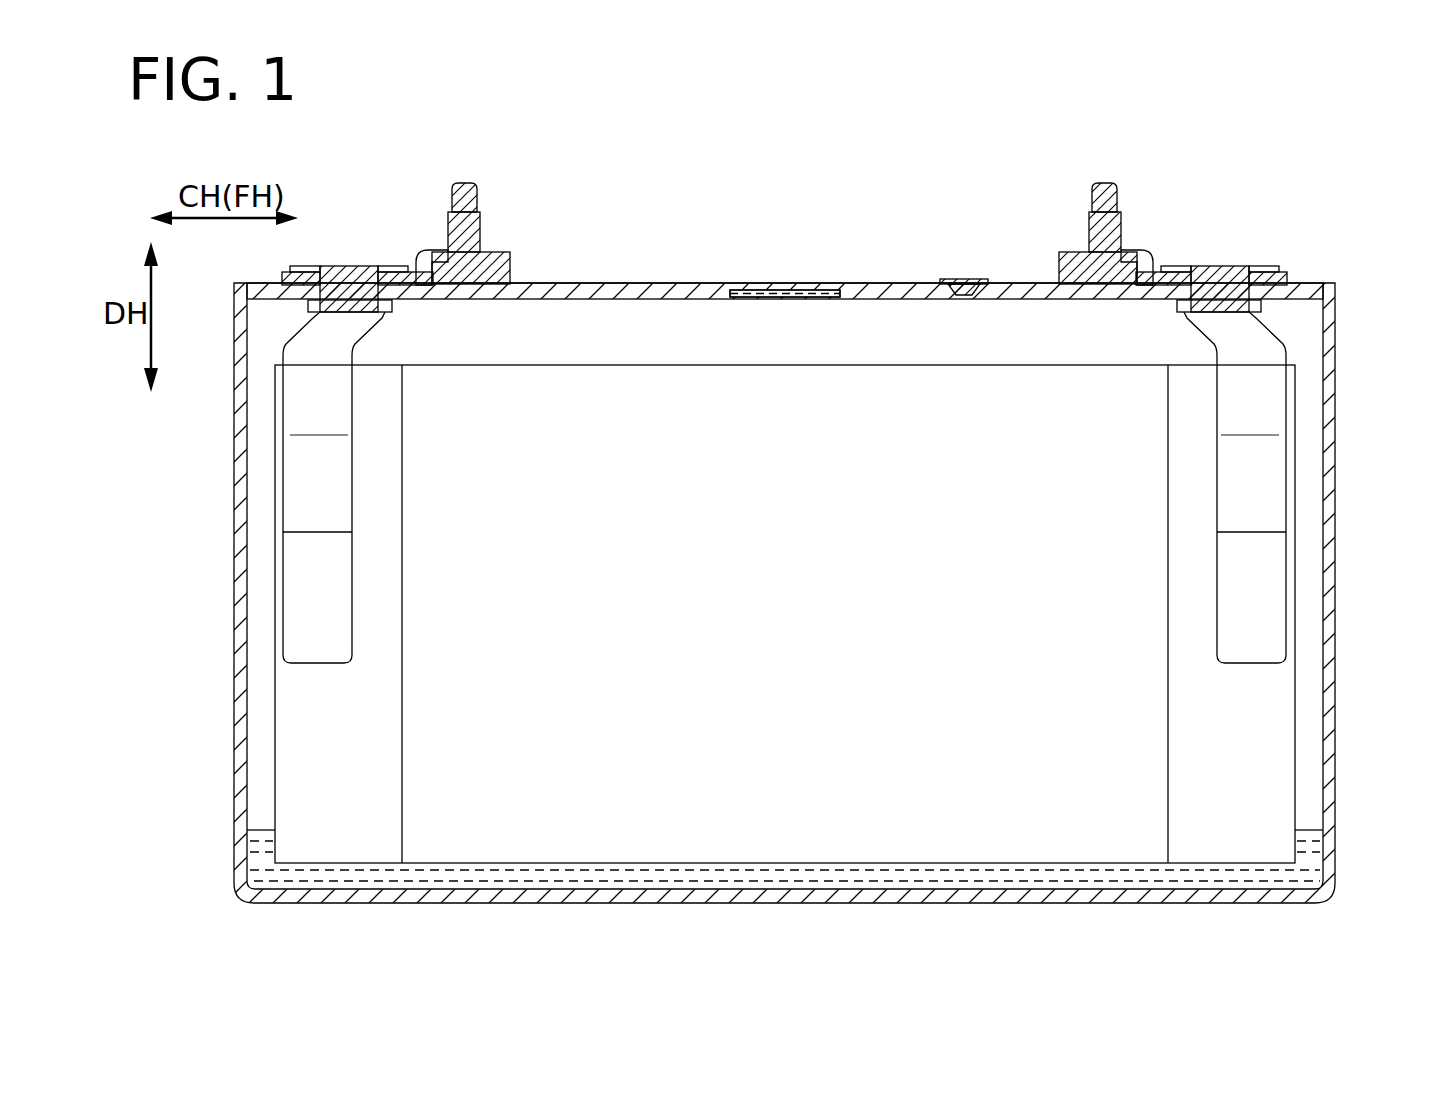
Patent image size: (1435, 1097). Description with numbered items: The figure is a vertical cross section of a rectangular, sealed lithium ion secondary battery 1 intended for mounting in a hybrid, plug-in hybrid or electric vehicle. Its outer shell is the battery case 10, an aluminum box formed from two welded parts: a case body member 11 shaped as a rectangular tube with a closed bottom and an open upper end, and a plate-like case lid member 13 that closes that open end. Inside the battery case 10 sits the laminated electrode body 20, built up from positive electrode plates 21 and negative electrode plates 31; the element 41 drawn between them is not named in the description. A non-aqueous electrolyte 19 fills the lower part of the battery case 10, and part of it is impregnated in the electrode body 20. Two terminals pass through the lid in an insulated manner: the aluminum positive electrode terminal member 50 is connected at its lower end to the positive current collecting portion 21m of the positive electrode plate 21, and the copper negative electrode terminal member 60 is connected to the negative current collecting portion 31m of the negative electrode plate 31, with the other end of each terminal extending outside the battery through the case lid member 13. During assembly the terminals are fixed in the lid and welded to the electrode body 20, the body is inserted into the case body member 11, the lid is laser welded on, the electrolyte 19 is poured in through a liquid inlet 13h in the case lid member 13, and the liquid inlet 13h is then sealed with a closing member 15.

The battery 1 is at (800, 182).
The battery case 10 is at (505, 903).
The case body member 11 is at (343, 903).
The case lid member 13 is at (648, 283).
The liquid inlet 13h is at (964, 300).
The closing member 15 is at (970, 279).
The non-aqueous electrolyte 19 is at (740, 808).
The electrode body 20 is at (1108, 818).
The positive electrode plate 21 is at (297, 708).
The positive current collecting portion 21m is at (303, 763).
The negative electrode plate 31 is at (1273, 708).
The negative current collecting portion 31m is at (1273, 780).
The separator 41 is at (890, 815).
The positive electrode terminal member 50 is at (430, 252).
The negative electrode terminal member 60 is at (1143, 252).